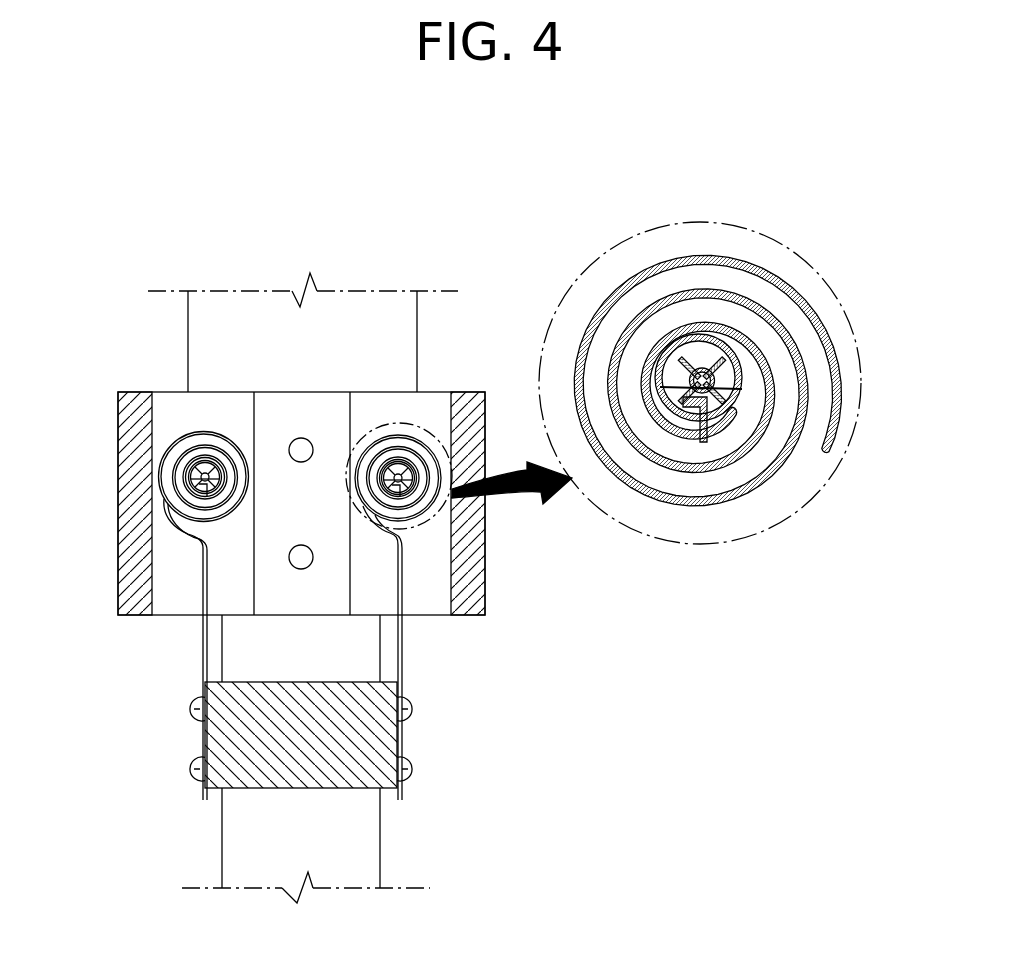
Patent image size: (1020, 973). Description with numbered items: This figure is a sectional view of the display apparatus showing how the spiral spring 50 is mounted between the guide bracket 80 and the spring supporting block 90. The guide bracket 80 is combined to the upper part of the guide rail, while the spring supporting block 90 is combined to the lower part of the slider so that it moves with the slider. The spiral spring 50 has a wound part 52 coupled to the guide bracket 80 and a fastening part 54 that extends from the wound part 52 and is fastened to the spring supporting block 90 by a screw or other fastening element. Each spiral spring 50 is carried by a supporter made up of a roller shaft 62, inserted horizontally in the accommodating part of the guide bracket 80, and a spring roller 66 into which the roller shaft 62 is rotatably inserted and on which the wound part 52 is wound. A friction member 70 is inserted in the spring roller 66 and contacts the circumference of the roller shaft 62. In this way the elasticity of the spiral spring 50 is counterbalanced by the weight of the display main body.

The spiral spring 50 is at (474, 617).
The wound part 52 is at (425, 533).
The fastening part 54 is at (401, 640).
The roller shaft 62 is at (750, 343).
The spring roller 66 is at (700, 328).
The friction member 70 is at (732, 415).
The guide bracket 80 is at (118, 463).
The spring supporting block 90 is at (388, 742).